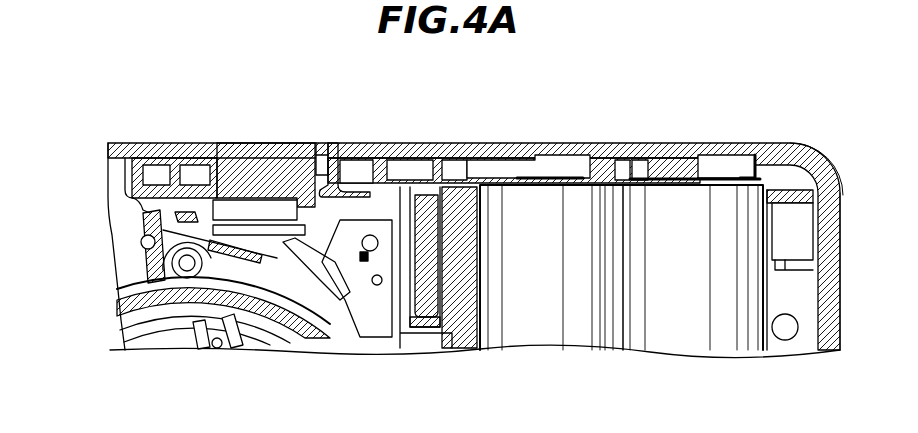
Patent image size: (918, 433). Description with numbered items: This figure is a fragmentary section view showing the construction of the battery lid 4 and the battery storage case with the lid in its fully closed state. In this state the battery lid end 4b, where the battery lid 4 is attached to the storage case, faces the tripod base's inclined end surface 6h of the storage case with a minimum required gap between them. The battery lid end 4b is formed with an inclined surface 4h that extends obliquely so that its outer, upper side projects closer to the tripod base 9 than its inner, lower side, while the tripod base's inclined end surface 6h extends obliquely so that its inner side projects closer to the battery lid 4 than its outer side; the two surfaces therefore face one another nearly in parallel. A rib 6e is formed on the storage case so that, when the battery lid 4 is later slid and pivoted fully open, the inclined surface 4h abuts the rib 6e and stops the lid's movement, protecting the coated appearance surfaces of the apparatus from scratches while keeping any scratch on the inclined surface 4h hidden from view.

The battery lid 4 is at (566, 145).
The battery lid end 4b is at (314, 146).
The inclined surface 4h is at (324, 146).
The tripod base 9 is at (233, 152).
The tripod base's inclined end surface 6h is at (165, 233).
The rib 6e is at (345, 222).